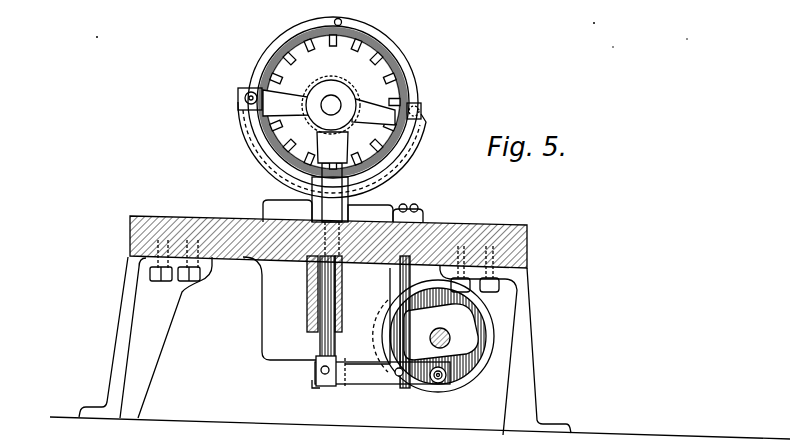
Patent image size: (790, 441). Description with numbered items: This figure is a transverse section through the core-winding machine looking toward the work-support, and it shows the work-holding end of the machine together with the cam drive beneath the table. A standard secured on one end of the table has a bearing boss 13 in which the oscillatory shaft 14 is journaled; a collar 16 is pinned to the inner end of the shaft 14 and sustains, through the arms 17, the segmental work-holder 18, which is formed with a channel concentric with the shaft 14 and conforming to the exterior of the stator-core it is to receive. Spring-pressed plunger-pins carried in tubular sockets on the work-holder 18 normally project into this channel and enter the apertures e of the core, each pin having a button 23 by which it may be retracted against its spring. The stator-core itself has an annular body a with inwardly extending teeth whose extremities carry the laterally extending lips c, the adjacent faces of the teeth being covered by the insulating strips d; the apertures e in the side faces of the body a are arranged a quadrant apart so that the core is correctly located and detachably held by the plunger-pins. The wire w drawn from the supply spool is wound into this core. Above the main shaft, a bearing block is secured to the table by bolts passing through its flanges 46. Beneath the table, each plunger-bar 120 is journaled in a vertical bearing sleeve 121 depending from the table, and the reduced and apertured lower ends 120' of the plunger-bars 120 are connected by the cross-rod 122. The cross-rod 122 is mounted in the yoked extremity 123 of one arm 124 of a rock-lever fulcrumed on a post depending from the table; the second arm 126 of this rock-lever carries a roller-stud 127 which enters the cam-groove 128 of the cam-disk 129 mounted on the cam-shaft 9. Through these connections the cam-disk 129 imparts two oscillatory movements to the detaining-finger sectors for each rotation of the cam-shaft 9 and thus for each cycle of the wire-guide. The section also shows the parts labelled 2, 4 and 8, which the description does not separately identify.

The legs of the stand 2 is at (345, 346).
The table top 4 is at (172, 216).
The frame body 8 is at (316, 310).
The cam-shaft 9 is at (451, 338).
The bearing boss 13 is at (345, 92).
The oscillatory shaft 14 is at (331, 105).
The collar 16 is at (323, 88).
The arms 17 is at (371, 116).
The segmental work-holder 18 is at (404, 157).
The button 23 is at (247, 90).
The flanges 46 is at (264, 212).
The plunger-bar 120 is at (348, 319).
The reduced and apertured lower ends 120' is at (304, 395).
The vertical bearing sleeve 121 is at (307, 295).
The cross-rod 122 is at (327, 378).
The yoked extremity 123 is at (345, 368).
The arm 124 is at (382, 373).
The second arm 126 is at (405, 389).
The roller-stud 127 is at (438, 384).
The cam-groove 128 is at (470, 374).
The cam-disk 129 is at (480, 294).
The annular body a is at (406, 60).
The laterally extending lips c is at (293, 148).
The insulating strips d is at (372, 148).
The apertures e is at (342, 21).
The wire w is at (427, 125).